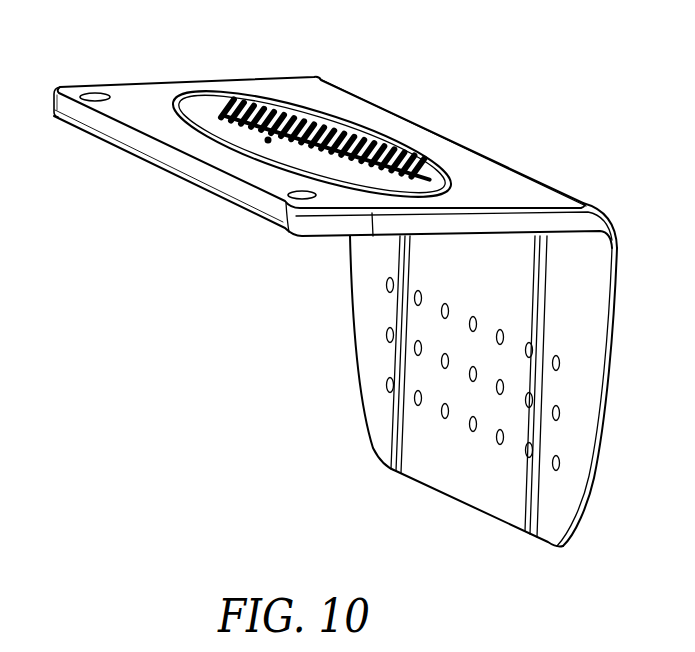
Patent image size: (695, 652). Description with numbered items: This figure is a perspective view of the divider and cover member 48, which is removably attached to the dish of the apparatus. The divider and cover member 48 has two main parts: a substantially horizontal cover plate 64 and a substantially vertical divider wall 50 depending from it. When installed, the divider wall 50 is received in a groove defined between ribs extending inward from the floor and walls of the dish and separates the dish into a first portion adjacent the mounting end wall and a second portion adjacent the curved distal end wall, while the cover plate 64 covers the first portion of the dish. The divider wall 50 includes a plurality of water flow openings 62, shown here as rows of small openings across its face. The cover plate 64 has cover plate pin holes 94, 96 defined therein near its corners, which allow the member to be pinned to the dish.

The divider and cover member 48 is at (342, 281).
The cover plate 64 is at (150, 90).
The divider wall 50 is at (510, 391).
The water flow openings 62 is at (561, 463).
The cover plate pin hole 94 is at (298, 191).
The cover plate pin hole 96 is at (92, 94).